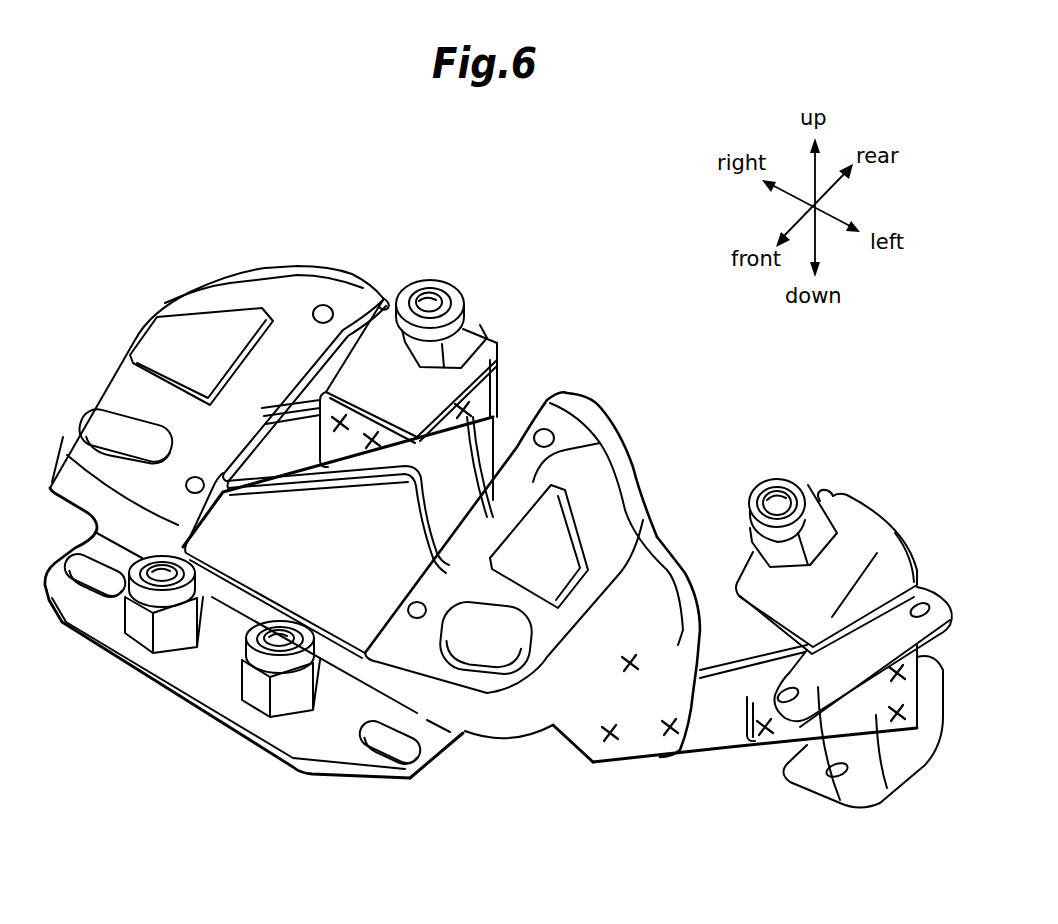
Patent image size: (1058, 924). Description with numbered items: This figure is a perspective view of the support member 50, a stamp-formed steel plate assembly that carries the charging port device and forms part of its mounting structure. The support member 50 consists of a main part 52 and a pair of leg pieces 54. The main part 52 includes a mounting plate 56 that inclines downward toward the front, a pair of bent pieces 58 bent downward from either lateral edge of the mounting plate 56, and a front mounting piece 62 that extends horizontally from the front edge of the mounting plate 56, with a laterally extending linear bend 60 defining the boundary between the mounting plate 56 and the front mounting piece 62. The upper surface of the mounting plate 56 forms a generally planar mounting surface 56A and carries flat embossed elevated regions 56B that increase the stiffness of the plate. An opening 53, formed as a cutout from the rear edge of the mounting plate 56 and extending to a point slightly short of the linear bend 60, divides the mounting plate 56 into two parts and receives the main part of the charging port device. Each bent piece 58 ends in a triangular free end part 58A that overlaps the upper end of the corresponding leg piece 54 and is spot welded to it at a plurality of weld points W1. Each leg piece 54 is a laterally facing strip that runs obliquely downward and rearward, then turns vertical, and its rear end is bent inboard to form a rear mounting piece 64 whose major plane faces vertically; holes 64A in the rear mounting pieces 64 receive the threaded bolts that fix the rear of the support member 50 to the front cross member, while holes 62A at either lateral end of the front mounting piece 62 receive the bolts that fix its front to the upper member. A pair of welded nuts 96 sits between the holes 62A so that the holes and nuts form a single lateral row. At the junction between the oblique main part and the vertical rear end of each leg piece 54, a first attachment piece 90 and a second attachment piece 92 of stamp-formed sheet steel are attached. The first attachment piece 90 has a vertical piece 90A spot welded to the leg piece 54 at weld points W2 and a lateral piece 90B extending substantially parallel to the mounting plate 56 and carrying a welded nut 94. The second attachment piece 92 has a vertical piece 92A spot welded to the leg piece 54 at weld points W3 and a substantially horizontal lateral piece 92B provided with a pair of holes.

The support member 50 is at (587, 378).
The main part 52 is at (601, 462).
The opening 53 is at (262, 575).
The leg piece 54 is at (285, 430).
The mounting plate 56 is at (497, 457).
The mounting surface 56A is at (614, 487).
The elevated region 56B is at (118, 417).
The bent piece 58 is at (507, 717).
The free end part 58A is at (667, 647).
The linear bend 60 is at (372, 690).
The front mounting piece 62 is at (313, 750).
The hole 62A is at (95, 583).
The rear mounting piece 64 is at (841, 780).
The hole 64A is at (840, 780).
The first attachment piece 90 is at (640, 477).
The vertical piece 90A is at (487, 387).
The lateral piece 90B is at (490, 347).
The second attachment piece 92 is at (849, 754).
The vertical piece 92A is at (940, 700).
The lateral piece 92B is at (828, 748).
The welded nut 94 is at (431, 296).
The welded nut 96 is at (167, 637).
The weld point W1 is at (666, 740).
The weld point W2 is at (372, 447).
The weld point W3 is at (766, 722).